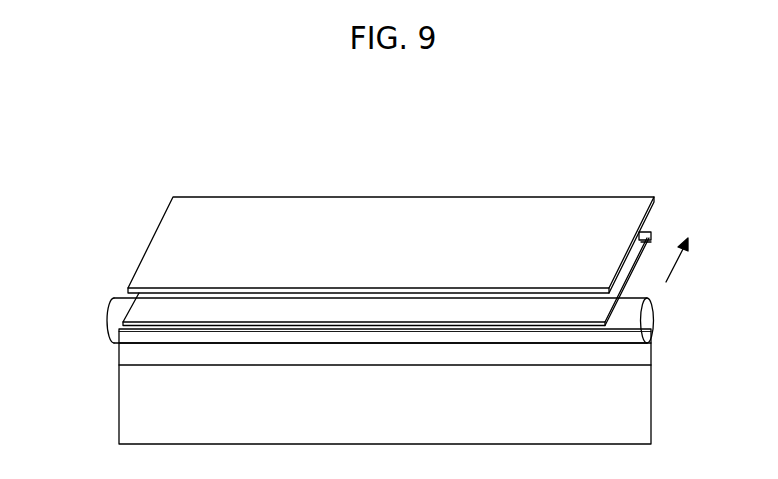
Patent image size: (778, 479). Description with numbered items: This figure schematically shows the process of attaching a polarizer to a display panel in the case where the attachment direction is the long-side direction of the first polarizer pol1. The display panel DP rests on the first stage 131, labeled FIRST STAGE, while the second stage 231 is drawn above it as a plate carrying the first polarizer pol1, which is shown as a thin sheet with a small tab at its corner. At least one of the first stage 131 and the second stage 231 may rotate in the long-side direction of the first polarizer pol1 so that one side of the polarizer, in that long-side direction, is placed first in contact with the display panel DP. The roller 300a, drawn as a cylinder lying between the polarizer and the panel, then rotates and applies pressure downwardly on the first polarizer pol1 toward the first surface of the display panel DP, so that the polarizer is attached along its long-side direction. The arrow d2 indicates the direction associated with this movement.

The second stage 231 is at (439, 203).
The first polarizer pol1 is at (643, 240).
The second direction d2 is at (687, 260).
The roller 300a is at (108, 321).
The display panel DP is at (648, 351).
The first stage 131 is at (640, 410).